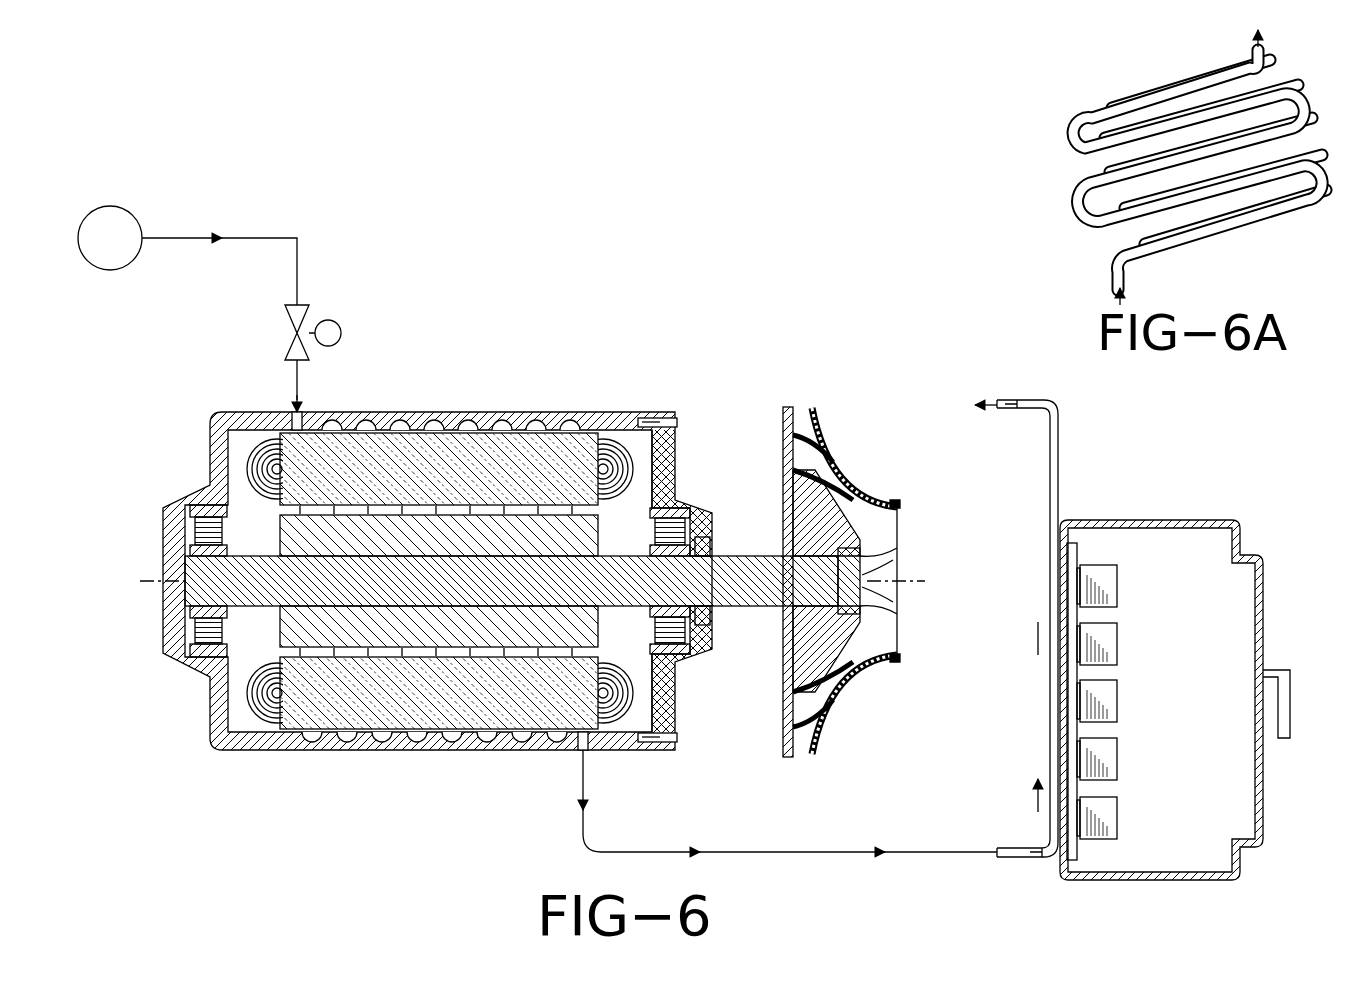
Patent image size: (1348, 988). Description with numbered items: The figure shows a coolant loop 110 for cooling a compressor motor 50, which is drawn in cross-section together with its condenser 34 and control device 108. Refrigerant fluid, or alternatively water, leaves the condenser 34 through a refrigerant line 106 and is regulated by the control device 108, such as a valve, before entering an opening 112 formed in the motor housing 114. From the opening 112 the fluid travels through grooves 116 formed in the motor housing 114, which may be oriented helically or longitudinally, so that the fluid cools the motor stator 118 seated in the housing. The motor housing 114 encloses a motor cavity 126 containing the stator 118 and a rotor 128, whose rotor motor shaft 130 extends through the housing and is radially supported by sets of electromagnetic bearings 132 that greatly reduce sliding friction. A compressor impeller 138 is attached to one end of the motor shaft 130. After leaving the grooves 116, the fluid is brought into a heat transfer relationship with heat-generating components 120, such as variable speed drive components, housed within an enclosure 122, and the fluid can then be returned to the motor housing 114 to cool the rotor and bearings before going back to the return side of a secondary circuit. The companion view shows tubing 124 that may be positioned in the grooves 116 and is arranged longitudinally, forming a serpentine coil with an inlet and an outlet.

In FIG. 6, the condenser 34 is at (94, 252).
In FIG. 6, the compressor motor 50 is at (163, 552).
In FIG. 6, the refrigerant line 106 is at (255, 237).
In FIG. 6, the control device 108 is at (333, 320).
In FIG. 6, the coolant loop 110 is at (1104, 440).
In FIG. 6, the opening 112 is at (292, 410).
In FIG. 6, the motor housing 114 is at (462, 750).
In FIG. 6, the grooves 116 is at (386, 412).
In FIG. 6, the motor stator 118 is at (265, 443).
In FIG. 6, the heat-generating components 120 is at (1117, 645).
In FIG. 6, the enclosure 122 is at (1263, 640).
In FIG. 6A, the tubing 124 is at (1230, 247).
In FIG. 6, the motor cavity 126 is at (243, 713).
In FIG. 6, the rotor 128 is at (278, 533).
In FIG. 6, the rotor motor shaft 130 is at (750, 556).
In FIG. 6, the electromagnetic bearings 132 is at (208, 658).
In FIG. 6, the compressor impeller 138 is at (850, 663).